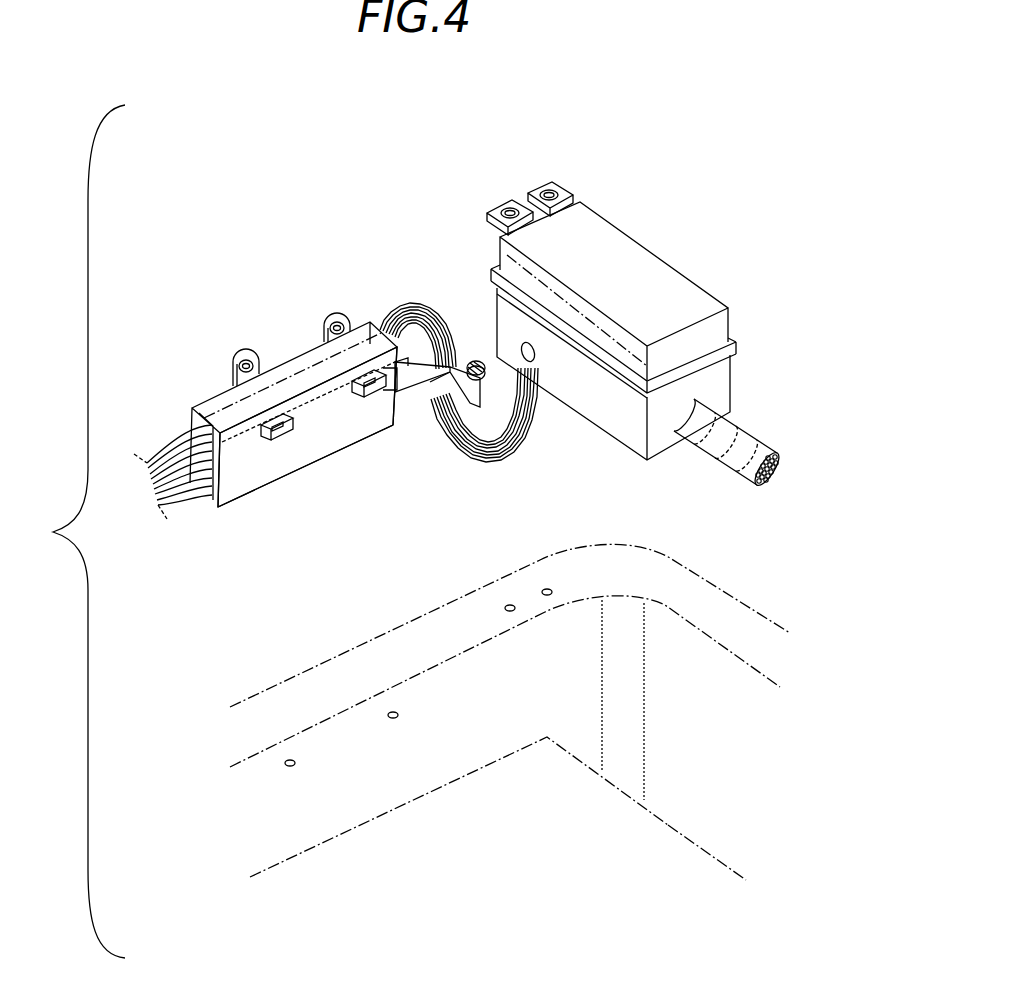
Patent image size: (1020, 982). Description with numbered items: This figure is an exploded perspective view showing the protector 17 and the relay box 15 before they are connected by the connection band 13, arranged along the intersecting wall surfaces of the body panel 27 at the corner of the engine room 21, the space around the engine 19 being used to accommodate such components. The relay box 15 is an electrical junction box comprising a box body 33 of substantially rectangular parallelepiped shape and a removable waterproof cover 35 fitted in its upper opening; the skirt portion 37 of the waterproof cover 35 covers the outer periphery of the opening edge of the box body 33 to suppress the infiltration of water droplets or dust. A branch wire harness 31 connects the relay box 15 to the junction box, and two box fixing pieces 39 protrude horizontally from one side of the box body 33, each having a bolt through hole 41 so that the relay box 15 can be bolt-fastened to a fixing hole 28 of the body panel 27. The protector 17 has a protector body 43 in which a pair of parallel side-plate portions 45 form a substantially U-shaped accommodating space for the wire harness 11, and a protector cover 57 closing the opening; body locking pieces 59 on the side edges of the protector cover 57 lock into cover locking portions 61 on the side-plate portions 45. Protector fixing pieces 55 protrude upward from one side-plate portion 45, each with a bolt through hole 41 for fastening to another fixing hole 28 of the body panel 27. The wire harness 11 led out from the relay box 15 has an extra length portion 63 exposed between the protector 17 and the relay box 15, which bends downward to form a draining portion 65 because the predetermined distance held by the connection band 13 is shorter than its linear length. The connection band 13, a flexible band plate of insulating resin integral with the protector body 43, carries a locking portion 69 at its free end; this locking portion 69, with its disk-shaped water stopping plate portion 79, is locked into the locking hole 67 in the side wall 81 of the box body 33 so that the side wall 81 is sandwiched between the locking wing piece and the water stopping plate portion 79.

The wire harness 11 is at (177, 447).
The connection band 13 is at (407, 407).
The relay box 15 is at (640, 307).
The protector 17 is at (278, 356).
The engine 19 is at (672, 820).
The engine room 21 is at (675, 680).
The body panel 27 is at (363, 763).
The fixing hole 28 is at (512, 612).
The branch wire harness 31 is at (738, 417).
The box body 33 is at (627, 430).
The waterproof cover 35 is at (602, 233).
The skirt portion 37 is at (737, 341).
The box fixing piece 39 is at (546, 182).
The bolt through hole 41 is at (238, 367).
The protector body 43 is at (230, 507).
The side-plate portion 45 is at (243, 486).
The protector fixing piece 55 is at (237, 360).
The protector cover 57 is at (360, 342).
The body locking piece 59 is at (278, 448).
The cover locking portion 61 is at (290, 432).
The extra length portion 63 is at (406, 318).
The draining portion 65 is at (503, 463).
The locking hole 67 is at (533, 347).
The locking portion 69 is at (460, 353).
The water stopping plate portion 79 is at (472, 362).
The side wall 81 is at (577, 400).